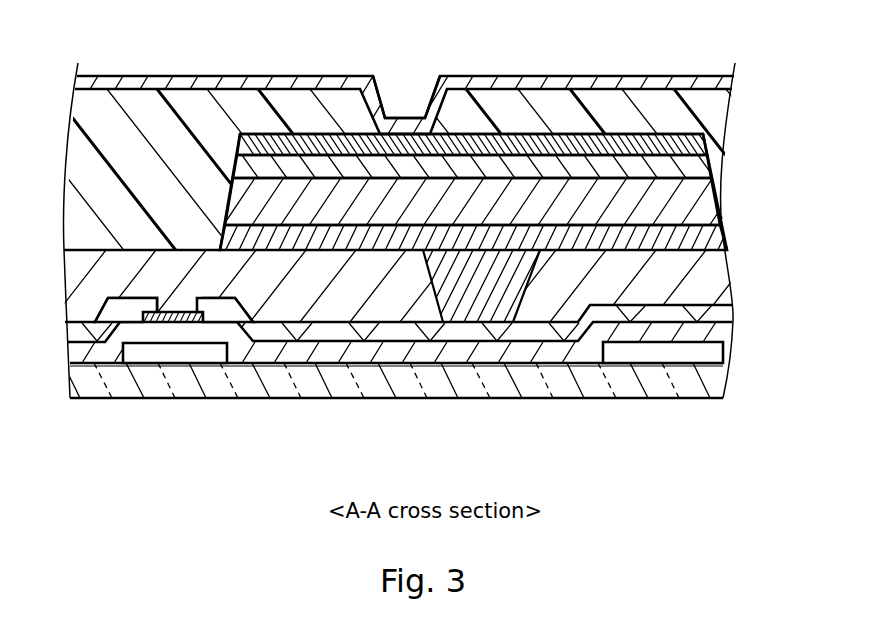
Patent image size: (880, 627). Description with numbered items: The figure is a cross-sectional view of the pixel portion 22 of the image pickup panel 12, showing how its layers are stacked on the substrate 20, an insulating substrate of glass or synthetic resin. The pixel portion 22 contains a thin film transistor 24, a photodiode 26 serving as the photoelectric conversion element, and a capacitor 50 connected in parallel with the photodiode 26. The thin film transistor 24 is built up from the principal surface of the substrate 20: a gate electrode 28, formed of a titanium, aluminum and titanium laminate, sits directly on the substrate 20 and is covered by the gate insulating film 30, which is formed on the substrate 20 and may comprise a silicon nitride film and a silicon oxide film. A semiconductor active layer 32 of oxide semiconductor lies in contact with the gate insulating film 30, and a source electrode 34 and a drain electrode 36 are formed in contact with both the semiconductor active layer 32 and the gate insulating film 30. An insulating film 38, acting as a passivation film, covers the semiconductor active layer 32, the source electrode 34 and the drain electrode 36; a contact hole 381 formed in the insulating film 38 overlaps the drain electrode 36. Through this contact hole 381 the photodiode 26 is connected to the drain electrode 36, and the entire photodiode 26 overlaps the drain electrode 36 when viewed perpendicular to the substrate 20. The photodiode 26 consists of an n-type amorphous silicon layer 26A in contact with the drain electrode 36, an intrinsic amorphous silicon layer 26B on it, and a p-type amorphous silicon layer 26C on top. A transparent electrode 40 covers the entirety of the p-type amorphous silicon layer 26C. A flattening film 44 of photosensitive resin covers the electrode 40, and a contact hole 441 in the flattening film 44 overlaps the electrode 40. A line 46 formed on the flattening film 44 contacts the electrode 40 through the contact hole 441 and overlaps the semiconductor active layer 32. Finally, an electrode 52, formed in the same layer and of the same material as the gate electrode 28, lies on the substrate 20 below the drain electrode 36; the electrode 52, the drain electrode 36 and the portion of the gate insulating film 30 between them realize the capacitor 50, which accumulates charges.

The image pickup panel 12 is at (741, 70).
The substrate 20 is at (720, 386).
The pixel portion 22 is at (312, 374).
The thin film transistor 24 is at (186, 376).
The photodiode 26 is at (521, 238).
The n-type amorphous silicon layer 26A is at (511, 273).
The intrinsic amorphous silicon layer 26B is at (717, 202).
The p-type amorphous silicon layer 26C is at (712, 168).
The gate electrode 28 is at (206, 322).
The gate insulating film 30 is at (720, 331).
The semiconductor active layer 32 is at (161, 320).
The source electrode 34 is at (123, 312).
The drain electrode 36 is at (720, 311).
The insulating film 38 is at (718, 273).
The contact hole 381 is at (513, 324).
The electrode 40 is at (708, 144).
The flattening film 44 is at (82, 153).
The contact hole 441 is at (383, 92).
The line 46 is at (480, 85).
The capacitor 50 is at (425, 337).
The electrode 52 is at (720, 351).